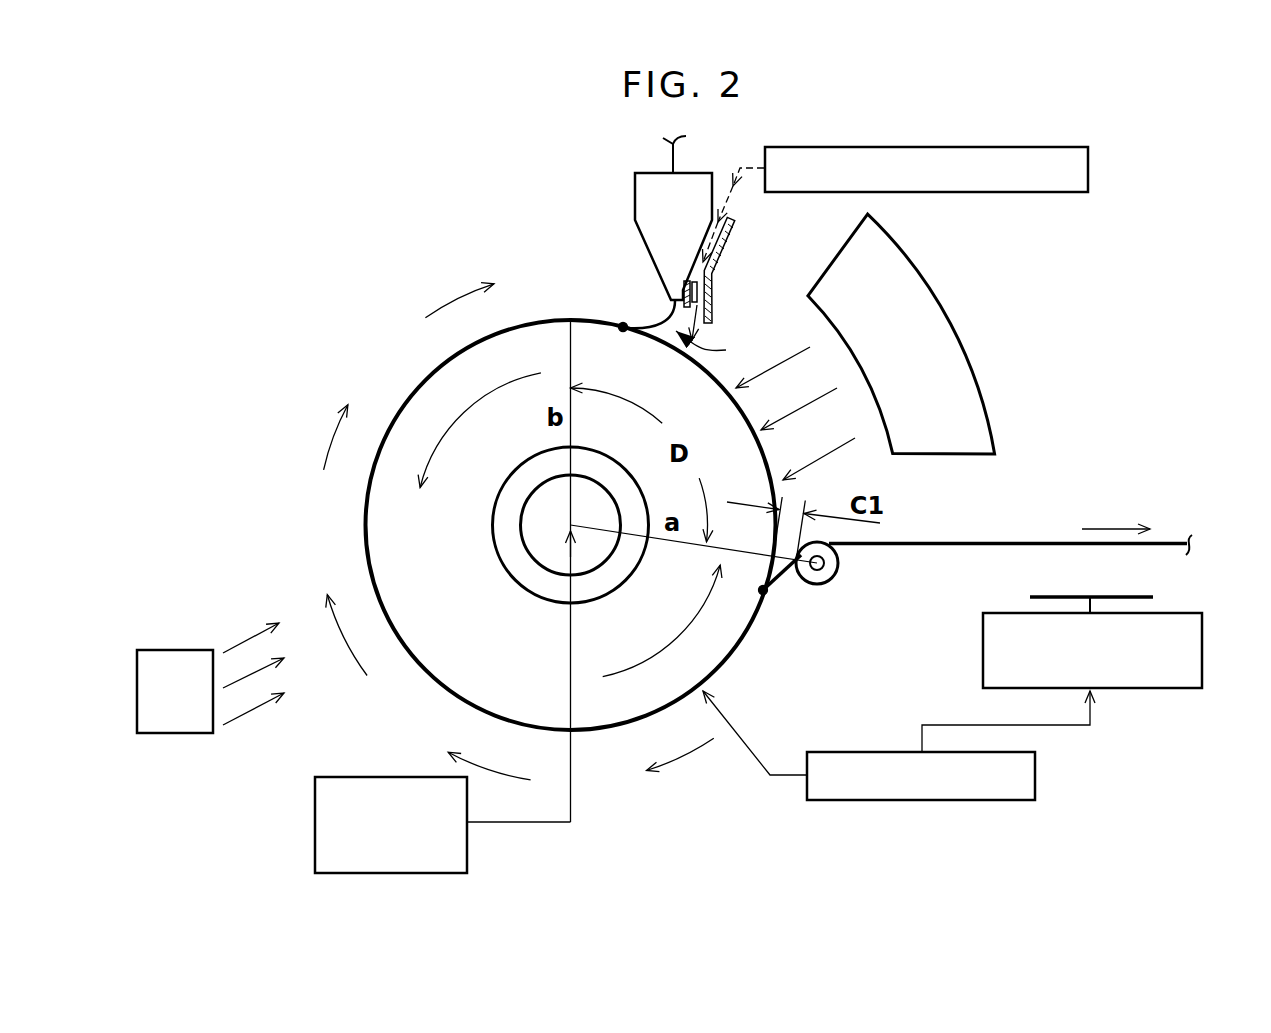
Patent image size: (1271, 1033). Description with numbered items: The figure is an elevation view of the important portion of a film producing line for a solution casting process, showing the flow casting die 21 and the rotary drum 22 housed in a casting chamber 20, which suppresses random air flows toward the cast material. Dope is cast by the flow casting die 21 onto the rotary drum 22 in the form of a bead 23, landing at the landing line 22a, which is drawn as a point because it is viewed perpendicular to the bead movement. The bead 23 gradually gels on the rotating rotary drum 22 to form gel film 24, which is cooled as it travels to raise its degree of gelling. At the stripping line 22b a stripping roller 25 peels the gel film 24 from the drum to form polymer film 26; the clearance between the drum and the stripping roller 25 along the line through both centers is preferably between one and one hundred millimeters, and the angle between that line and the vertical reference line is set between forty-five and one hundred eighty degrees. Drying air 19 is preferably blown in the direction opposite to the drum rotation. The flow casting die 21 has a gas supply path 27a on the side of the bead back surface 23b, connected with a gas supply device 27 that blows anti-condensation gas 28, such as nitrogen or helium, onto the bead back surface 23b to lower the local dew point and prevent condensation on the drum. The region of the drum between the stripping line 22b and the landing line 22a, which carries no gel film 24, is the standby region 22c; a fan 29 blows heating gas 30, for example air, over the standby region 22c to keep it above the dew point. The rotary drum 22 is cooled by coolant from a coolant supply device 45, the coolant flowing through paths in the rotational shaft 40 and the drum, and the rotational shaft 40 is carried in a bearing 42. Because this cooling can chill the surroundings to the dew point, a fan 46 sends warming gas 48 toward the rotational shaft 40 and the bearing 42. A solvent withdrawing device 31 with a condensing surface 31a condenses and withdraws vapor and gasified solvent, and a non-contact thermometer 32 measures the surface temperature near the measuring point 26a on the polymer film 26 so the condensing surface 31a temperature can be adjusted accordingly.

The drying air 19 is at (688, 750).
The casting chamber 20 is at (1080, 393).
The flow casting die 21 is at (635, 198).
The rotary drum 22 is at (595, 720).
The landing line 22a is at (615, 318).
The stripping line 22b is at (766, 597).
The standby region 22c is at (782, 487).
The bead 23 is at (657, 323).
The bead back surface 23b is at (727, 349).
The gel film 24 is at (404, 394).
The stripping roller 25 is at (832, 568).
The polymer film 26 is at (782, 572).
The measuring point 26a is at (697, 690).
The gas supply device 27 is at (1088, 170).
The gas supply path 27a is at (723, 246).
The anti-condensation gas 28 is at (700, 332).
The fan 29 is at (922, 300).
The heating gas 30 is at (800, 347).
The solvent withdrawing device 31 is at (1140, 690).
The condensing surface 31a is at (1140, 595).
The thermometer 32 is at (922, 800).
The rotational shaft 40 is at (542, 542).
The bearing 42 is at (499, 536).
The coolant supply device 45 is at (393, 775).
The fan 46 is at (172, 648).
The warming gas 48 is at (252, 707).